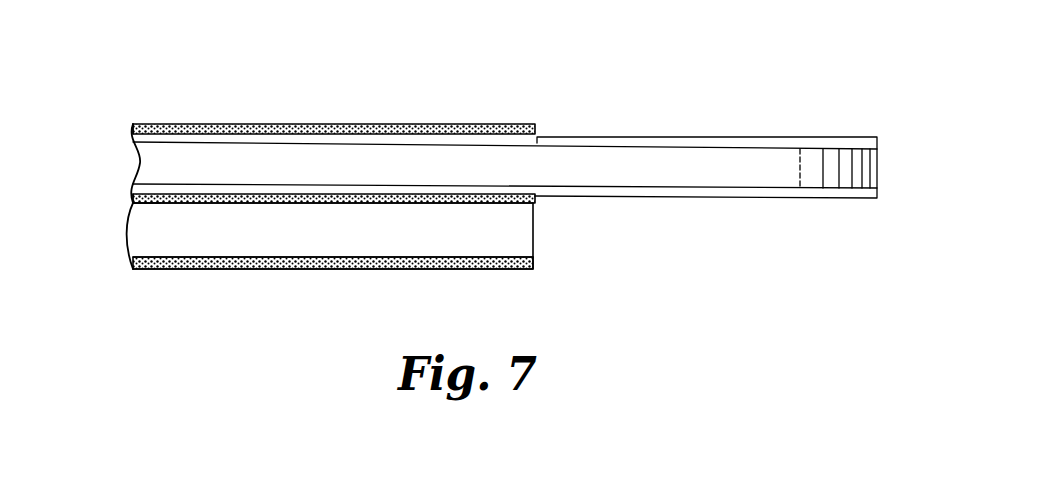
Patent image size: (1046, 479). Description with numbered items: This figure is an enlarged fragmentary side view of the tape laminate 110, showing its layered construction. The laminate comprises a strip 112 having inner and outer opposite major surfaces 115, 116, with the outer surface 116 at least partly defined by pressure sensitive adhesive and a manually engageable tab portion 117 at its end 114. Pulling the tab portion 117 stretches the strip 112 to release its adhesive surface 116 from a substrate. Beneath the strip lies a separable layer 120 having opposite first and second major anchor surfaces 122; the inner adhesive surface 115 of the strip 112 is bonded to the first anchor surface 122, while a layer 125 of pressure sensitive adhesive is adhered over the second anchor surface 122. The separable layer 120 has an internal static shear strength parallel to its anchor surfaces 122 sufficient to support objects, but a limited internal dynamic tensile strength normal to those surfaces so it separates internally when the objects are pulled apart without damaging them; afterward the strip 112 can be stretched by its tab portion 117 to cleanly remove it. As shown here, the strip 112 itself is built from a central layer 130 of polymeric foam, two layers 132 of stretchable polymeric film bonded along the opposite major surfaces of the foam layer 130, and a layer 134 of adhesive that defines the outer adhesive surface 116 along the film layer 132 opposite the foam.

The tape laminate 110 is at (778, 66).
The strip 112 is at (632, 133).
The end of strip 114 is at (878, 165).
The inner major surface 115 is at (157, 204).
The outer major surface 116 is at (450, 125).
The tab portion 117 is at (808, 137).
The separable layer 120 is at (521, 234).
The anchor surfaces 122 is at (354, 197).
The layer of pressure sensitive adhesive 125 is at (202, 270).
The central layer of polymeric foam 130 is at (557, 155).
The layers of stretchable polymeric film 132 is at (205, 190).
The layer of adhesive 134 is at (133, 196).